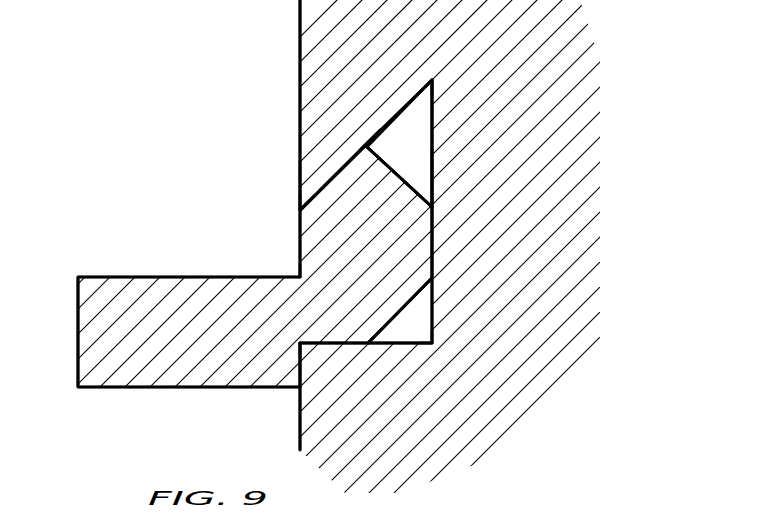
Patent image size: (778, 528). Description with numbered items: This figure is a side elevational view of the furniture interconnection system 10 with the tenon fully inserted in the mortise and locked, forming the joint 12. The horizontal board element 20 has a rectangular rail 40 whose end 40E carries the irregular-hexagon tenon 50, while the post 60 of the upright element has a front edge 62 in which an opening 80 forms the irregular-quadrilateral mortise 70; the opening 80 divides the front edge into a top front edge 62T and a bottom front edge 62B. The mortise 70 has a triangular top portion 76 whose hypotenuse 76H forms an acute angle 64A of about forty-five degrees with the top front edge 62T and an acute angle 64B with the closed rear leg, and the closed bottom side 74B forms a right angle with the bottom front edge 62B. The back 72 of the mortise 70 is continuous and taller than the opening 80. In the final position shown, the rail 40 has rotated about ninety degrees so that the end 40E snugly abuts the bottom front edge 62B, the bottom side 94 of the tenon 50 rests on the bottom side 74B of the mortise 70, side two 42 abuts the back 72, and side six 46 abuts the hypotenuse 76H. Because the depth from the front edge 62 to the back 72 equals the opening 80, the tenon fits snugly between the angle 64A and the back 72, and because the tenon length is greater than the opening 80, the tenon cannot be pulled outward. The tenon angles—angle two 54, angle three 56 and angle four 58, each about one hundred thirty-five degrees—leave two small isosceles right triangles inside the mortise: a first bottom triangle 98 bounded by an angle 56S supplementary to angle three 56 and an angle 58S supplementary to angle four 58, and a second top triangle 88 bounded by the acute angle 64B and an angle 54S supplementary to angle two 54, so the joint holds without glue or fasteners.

The furniture interconnection system 10 is at (200, 183).
The joint 12 is at (278, 233).
The horizontal board element 20 is at (110, 243).
The rectangular rail 40 is at (84, 330).
The end of the rail 40E is at (300, 367).
The side two 42 is at (432, 232).
The side six 46 is at (320, 187).
The tenon 50 is at (430, 240).
The angle two 54 is at (432, 207).
The angle supplementary to angle two 54S is at (433, 203).
The angle three 56 is at (432, 278).
The angle supplementary to angle three 56S is at (433, 280).
The angle four 58 is at (372, 348).
The angle supplementary to angle four 58S is at (372, 342).
The post 60 is at (300, 84).
The front edge 62 is at (300, 22).
The top front edge 62T is at (300, 173).
The bottom front edge 62B is at (300, 432).
The angle 64A is at (300, 207).
The angle 64B is at (437, 73).
The mortise 70 is at (433, 107).
The back of the mortise 72 is at (433, 180).
The closed bottom side of the mortise 74B is at (330, 345).
The top portion of the mortise 76 is at (403, 108).
The hypotenuse of the top portion 76H is at (330, 127).
The opening of the mortise 80 is at (301, 343).
The second top triangle 88 is at (417, 140).
The bottom side of the tenon 94 is at (313, 343).
The first bottom triangle 98 is at (424, 334).